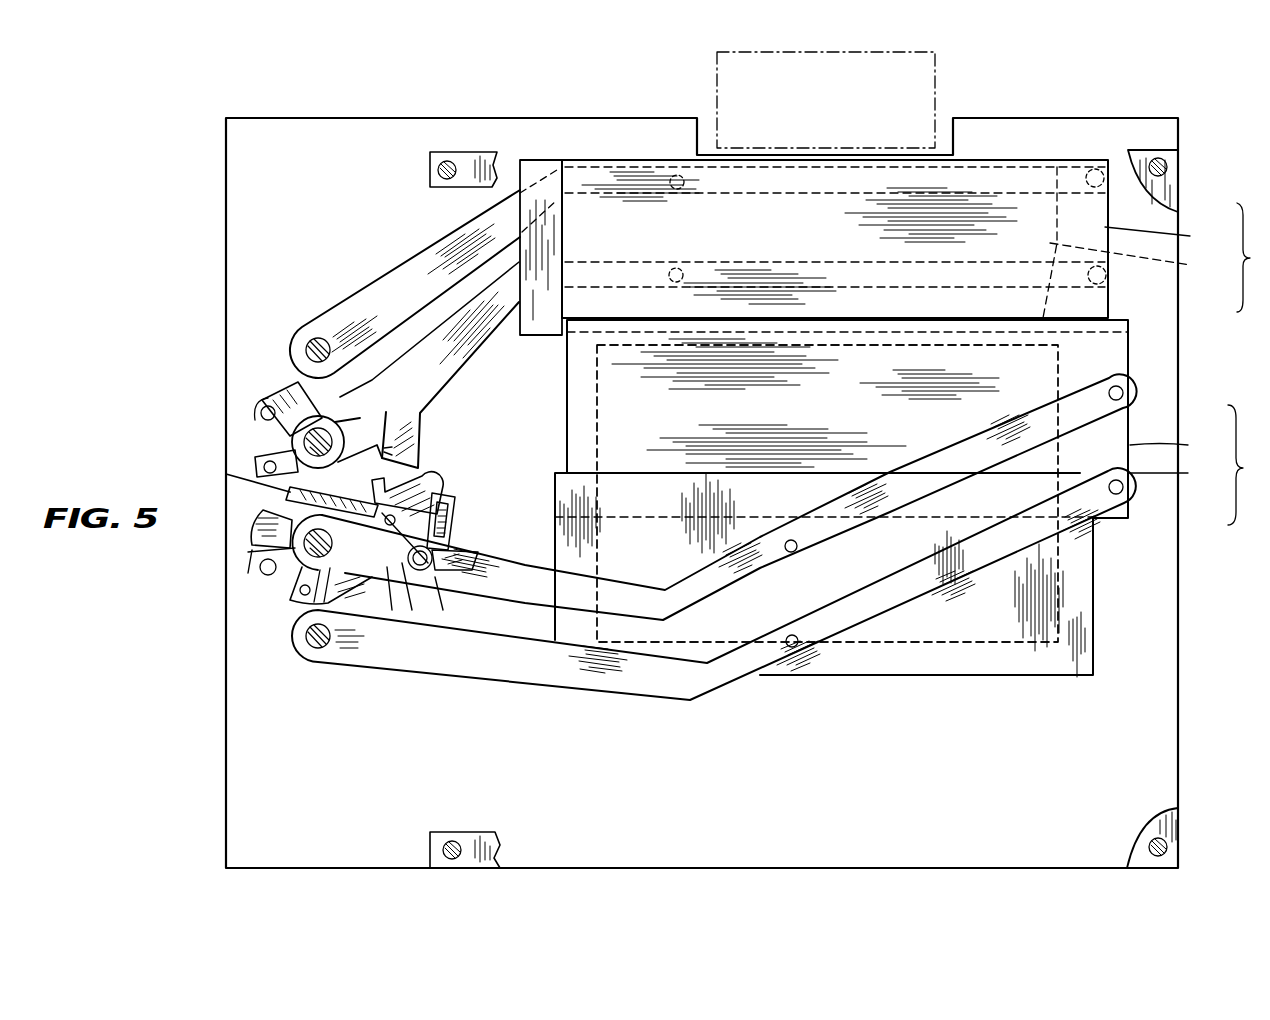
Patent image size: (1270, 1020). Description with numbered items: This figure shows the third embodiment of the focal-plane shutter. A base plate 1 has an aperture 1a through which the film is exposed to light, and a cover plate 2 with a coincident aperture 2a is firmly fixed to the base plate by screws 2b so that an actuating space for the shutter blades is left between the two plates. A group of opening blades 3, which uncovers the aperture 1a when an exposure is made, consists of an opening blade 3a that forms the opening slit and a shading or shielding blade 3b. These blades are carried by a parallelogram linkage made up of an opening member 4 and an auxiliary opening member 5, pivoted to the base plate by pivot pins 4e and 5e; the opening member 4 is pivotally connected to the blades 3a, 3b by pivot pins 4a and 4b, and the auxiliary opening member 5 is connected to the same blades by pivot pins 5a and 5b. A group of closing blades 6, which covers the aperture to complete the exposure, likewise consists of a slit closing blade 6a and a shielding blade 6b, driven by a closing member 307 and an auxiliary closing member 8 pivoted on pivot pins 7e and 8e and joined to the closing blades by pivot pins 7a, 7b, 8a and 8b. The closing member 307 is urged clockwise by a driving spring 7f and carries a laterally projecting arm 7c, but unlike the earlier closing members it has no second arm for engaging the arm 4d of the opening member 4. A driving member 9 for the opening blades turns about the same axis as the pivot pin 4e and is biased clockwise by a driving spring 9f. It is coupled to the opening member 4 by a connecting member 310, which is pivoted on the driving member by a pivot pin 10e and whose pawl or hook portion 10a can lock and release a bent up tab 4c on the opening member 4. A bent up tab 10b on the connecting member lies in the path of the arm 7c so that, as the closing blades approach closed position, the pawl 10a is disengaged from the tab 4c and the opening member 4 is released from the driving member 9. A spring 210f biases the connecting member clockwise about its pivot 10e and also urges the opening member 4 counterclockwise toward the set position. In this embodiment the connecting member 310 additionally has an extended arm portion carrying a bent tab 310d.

The base plate 1 is at (1167, 642).
The aperture 1a is at (987, 640).
The aperture 2a is at (827, 493).
The cover plate 2 is at (1162, 813).
The screws 2b is at (440, 167).
The group of opening blades 3 is at (907, 498).
The opening blade 3a is at (1175, 448).
The shading or shielding blade 3b is at (1176, 475).
The opening member 4 is at (1077, 407).
The pivot pin 4a is at (1113, 400).
The pivot pin 4b is at (797, 551).
The bent up tab 4c is at (463, 507).
The arm 4d is at (292, 537).
The pivot pin 4e is at (332, 542).
The auxiliary opening member 5 is at (347, 657).
The pivot pin 5a is at (1120, 500).
The pivot pin 5b is at (797, 634).
The pivot pin 5e is at (305, 640).
The group of closing blades 6 is at (893, 247).
The slit closing blade 6a is at (1163, 238).
The shading or shielding blade 6b is at (1137, 263).
The pivot pin 7a is at (1103, 287).
The pivot pin 7b is at (675, 265).
The arm 7c is at (420, 417).
The pivot pin 7e is at (355, 432).
The driving spring 7f is at (253, 424).
The auxiliary closing member 8 is at (363, 293).
The pivot pin 8a is at (1096, 170).
The pivot pin 8b is at (677, 190).
The pivot pin 8e is at (313, 345).
The driving member 9 is at (393, 548).
The driving spring 9f is at (264, 582).
The pawl or hook portion 10a is at (430, 478).
The bent up tab 10b is at (388, 410).
The pivot pin 10e is at (430, 560).
The spring 210f is at (515, 535).
The closing member 307 is at (343, 400).
The connecting member 310 is at (400, 540).
The bent tab 310d is at (232, 475).